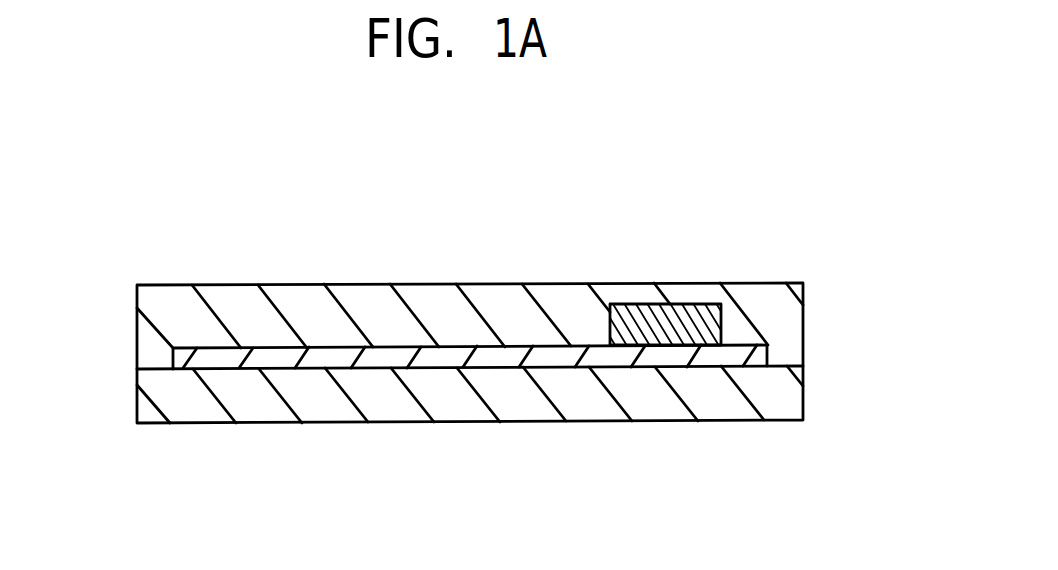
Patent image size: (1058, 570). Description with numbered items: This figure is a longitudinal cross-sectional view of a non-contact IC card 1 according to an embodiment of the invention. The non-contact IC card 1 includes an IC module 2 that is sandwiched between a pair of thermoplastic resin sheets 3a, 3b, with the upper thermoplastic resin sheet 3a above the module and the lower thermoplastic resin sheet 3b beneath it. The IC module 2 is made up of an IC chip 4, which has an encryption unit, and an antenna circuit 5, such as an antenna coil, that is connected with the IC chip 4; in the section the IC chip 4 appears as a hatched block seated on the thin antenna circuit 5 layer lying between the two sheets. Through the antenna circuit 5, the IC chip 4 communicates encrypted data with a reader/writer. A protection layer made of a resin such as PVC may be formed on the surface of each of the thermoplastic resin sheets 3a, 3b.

The non-contact IC card 1 is at (685, 193).
The IC module 2 is at (885, 277).
The thermoplastic resin sheet 3a is at (147, 340).
The thermoplastic resin sheet 3b is at (147, 407).
The IC chip 4 is at (721, 317).
The antenna circuit 5 is at (763, 358).